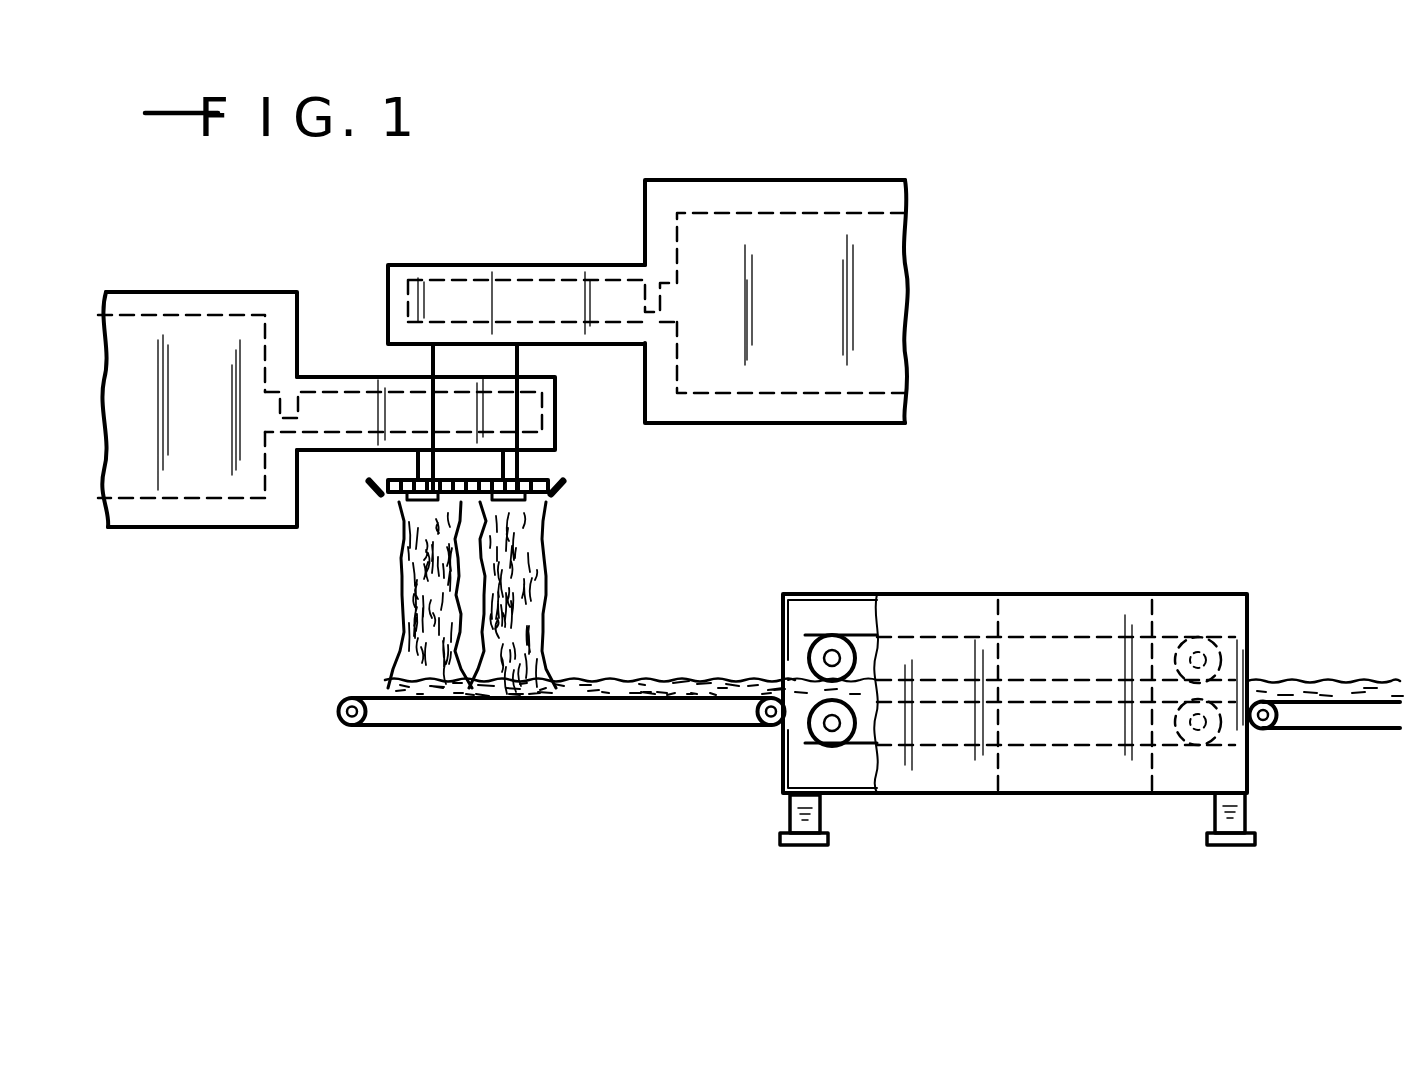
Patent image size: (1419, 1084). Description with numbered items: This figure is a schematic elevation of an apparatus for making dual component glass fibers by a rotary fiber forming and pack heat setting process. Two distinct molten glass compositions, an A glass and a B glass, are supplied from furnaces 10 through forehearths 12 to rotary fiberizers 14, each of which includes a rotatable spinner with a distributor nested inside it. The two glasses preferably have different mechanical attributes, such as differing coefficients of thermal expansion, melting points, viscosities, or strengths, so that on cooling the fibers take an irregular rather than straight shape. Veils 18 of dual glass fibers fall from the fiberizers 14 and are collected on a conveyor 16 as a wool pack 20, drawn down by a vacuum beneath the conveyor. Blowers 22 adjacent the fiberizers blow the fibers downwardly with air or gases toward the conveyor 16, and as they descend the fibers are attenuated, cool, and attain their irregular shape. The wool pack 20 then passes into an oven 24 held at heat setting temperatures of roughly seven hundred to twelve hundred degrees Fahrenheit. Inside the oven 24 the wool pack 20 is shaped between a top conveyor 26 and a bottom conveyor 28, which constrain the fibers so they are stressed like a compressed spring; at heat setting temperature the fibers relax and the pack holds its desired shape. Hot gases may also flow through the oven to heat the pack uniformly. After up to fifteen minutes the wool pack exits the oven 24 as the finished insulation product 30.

The furnace 10 is at (181, 292).
The forehearth 12 is at (462, 264).
The rotary fiberizer 14 is at (402, 503).
The conveyor 16 is at (376, 697).
The veil 18 is at (410, 620).
The wool pack 20 is at (664, 678).
The blower 22 is at (352, 502).
The oven 24 is at (1082, 594).
The top conveyor 26 is at (1040, 637).
The bottom conveyor 28 is at (1078, 702).
The insulation product 30 is at (1323, 680).